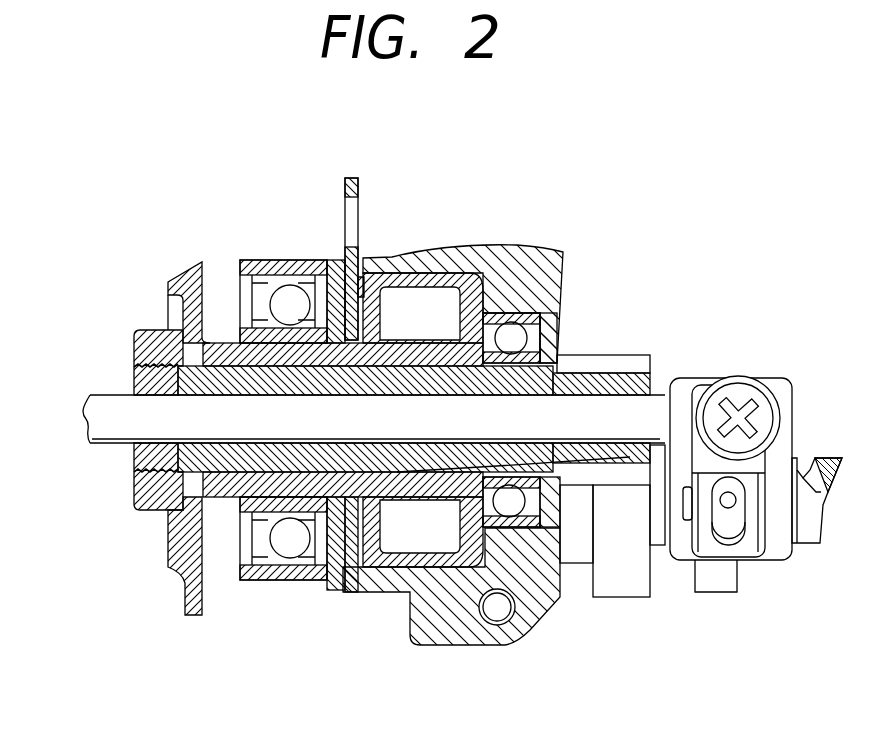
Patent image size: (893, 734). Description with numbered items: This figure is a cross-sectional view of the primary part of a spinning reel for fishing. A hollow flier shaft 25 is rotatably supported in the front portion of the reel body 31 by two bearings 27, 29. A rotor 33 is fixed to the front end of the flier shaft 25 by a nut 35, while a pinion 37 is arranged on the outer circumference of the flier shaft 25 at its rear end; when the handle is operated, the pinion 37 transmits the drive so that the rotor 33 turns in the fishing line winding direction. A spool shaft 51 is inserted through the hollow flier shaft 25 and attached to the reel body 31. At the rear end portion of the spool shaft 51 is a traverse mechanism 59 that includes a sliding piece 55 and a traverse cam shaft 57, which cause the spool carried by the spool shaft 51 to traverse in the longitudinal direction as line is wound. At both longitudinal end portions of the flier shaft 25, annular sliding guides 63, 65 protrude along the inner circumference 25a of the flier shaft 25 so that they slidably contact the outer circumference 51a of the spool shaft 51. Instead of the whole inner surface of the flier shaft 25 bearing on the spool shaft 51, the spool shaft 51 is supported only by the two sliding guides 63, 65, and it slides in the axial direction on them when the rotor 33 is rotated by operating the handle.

The flier shaft 25 is at (378, 383).
The inner circumference of the flier shaft 25a is at (566, 404).
The bearing 27 is at (288, 298).
The bearing 29 is at (512, 333).
The reel body 31 is at (484, 262).
The rotor 33 is at (185, 578).
The nut 35 is at (137, 340).
The pinion 37 is at (593, 362).
The spool shaft 51 is at (423, 421).
The outer circumference of the spool shaft 51a is at (230, 433).
The sliding piece 55 is at (760, 462).
The traverse cam shaft 57 is at (828, 462).
The traverse mechanism 59 is at (718, 555).
The annular sliding guide 63 is at (150, 443).
The annular sliding guide 65 is at (672, 378).